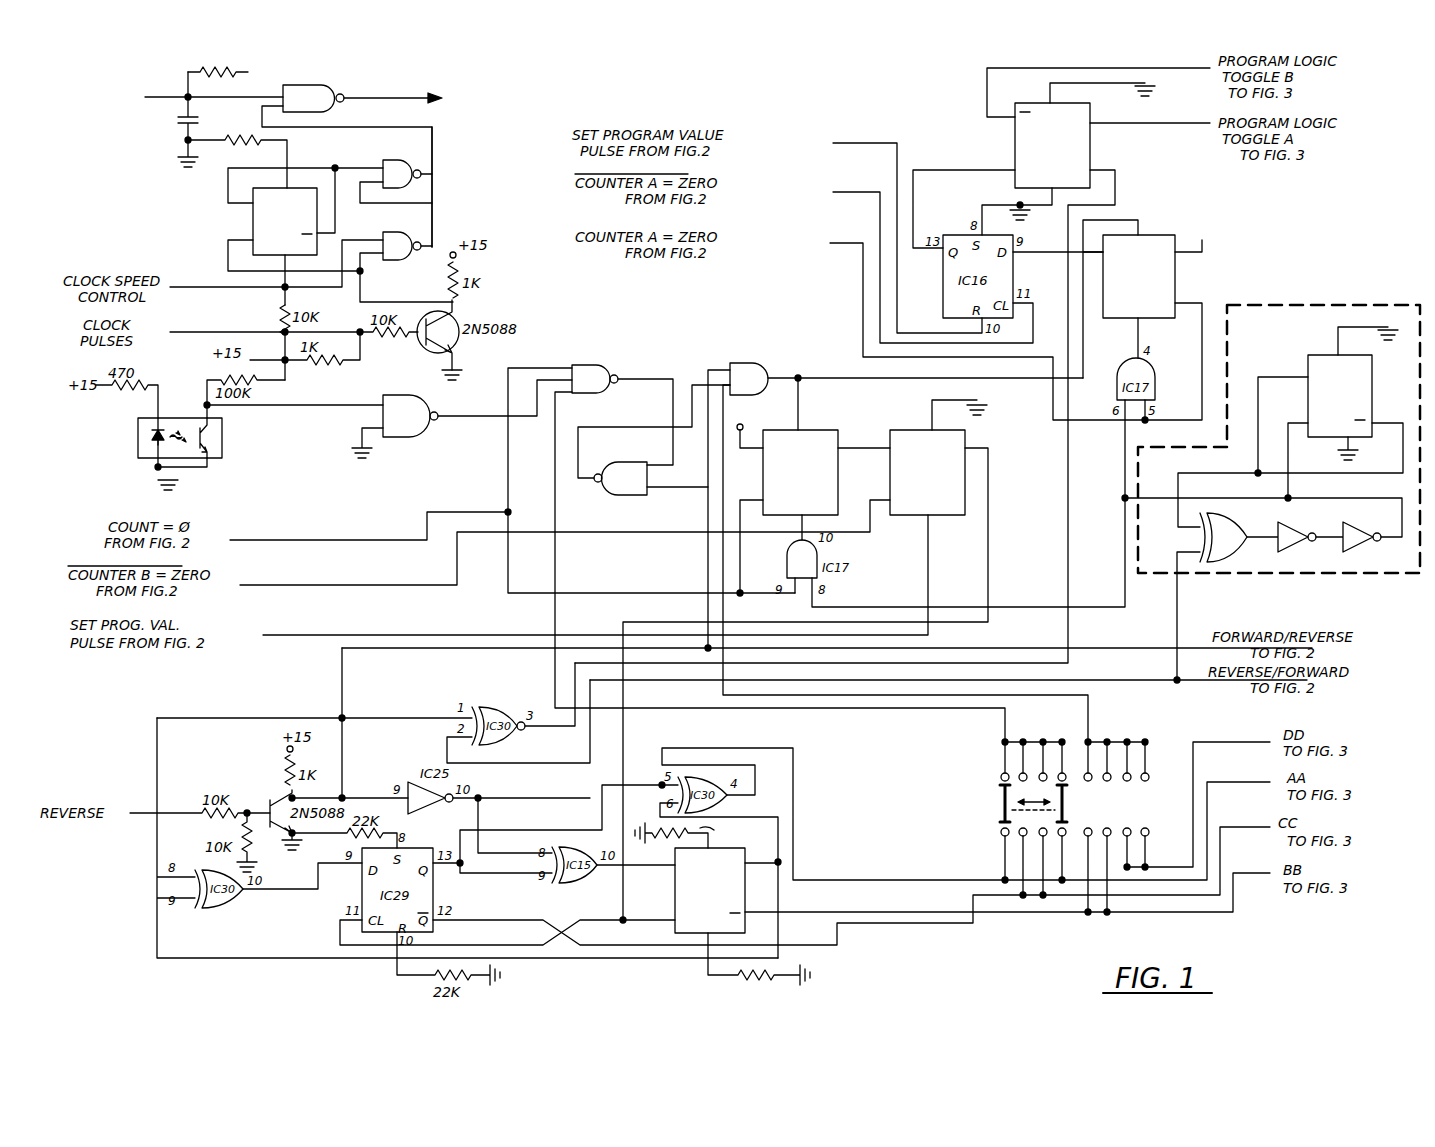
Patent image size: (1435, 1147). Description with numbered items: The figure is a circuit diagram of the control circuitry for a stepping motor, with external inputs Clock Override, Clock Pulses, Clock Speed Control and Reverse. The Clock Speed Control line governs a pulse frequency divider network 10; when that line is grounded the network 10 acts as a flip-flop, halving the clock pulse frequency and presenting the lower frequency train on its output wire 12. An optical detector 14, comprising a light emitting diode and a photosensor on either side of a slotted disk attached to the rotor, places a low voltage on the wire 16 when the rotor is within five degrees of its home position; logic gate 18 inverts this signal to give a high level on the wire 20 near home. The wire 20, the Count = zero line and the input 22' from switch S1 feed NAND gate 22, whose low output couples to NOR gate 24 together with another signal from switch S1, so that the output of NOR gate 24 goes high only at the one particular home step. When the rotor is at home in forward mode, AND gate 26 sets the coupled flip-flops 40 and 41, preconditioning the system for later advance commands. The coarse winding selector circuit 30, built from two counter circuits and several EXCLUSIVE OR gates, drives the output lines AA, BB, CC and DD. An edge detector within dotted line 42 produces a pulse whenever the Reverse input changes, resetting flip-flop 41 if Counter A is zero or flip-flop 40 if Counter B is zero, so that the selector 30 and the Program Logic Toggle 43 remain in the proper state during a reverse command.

The pulse frequency divider network 10 is at (455, 203).
The output wire 12 is at (432, 147).
The optical detector 14 is at (228, 465).
The wire 16 is at (332, 400).
The logic gate 18 is at (400, 388).
The wire 20 is at (478, 422).
The NAND gate 22 is at (606, 401).
The input 22' is at (780, 567).
The NOR gate 24 is at (634, 456).
The AND gate 26 is at (752, 362).
The coarse winding selector circuit 30 is at (808, 801).
The flip-flop 40 is at (828, 430).
The flip-flop 41 is at (1163, 235).
The edge detector 42 is at (1333, 307).
The Program Logic Toggle 43 is at (945, 517).
The switch S1 is at (1113, 723).